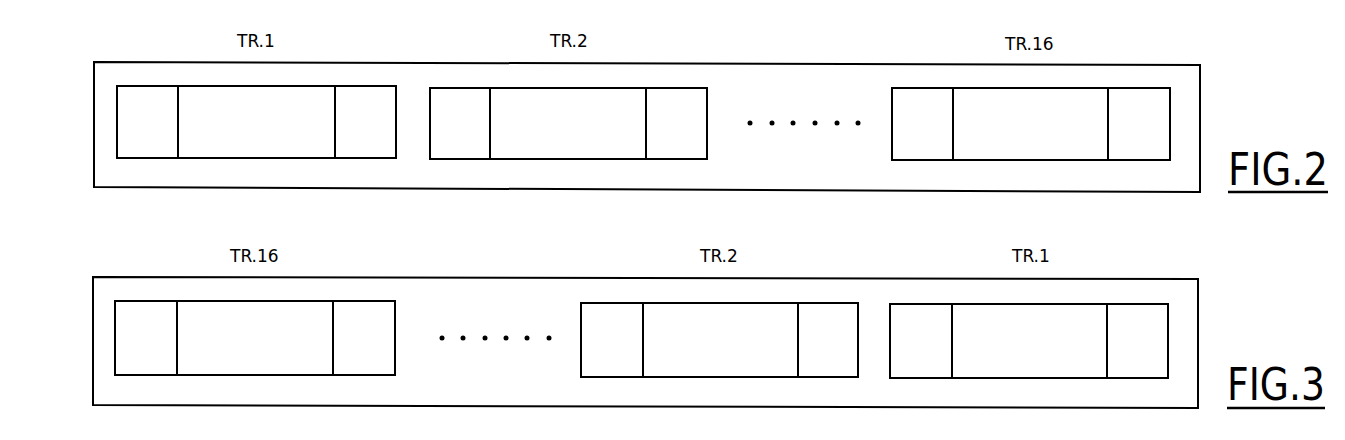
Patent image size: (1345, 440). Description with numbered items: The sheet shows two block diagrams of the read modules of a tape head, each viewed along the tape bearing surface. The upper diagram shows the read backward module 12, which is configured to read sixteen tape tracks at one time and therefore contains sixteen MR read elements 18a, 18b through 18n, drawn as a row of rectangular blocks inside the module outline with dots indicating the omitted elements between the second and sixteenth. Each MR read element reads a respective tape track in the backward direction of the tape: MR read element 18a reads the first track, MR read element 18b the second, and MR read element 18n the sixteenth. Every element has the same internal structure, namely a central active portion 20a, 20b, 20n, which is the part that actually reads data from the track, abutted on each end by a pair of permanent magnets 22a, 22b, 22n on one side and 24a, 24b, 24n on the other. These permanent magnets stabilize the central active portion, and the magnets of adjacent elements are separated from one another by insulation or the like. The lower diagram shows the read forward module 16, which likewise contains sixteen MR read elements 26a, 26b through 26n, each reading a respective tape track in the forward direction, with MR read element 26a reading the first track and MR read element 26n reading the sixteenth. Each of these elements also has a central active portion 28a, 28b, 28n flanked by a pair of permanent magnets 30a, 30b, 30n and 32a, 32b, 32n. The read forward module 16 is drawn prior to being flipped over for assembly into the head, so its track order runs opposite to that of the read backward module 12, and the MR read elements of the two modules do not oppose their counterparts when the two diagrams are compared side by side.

In FIG. 2, the read backward module 12 is at (1200, 102).
In FIG. 3, the read forward module 16 is at (1198, 303).
In FIG. 2, the MR read element 18a is at (262, 94).
In FIG. 2, the MR read element 18b is at (582, 95).
In FIG. 2, the MR read element 18n is at (1041, 96).
In FIG. 2, the central active portion 20a is at (277, 137).
In FIG. 2, the central active portion 20b is at (590, 140).
In FIG. 2, the central active portion 20n is at (1043, 140).
In FIG. 2, the permanent magnet 22a is at (140, 83).
In FIG. 2, the permanent magnet 22b is at (468, 87).
In FIG. 2, the permanent magnet 22n is at (913, 88).
In FIG. 2, the permanent magnet 24a is at (372, 83).
In FIG. 2, the permanent magnet 24b is at (692, 87).
In FIG. 2, the permanent magnet 24n is at (1148, 88).
In FIG. 3, the MR read element 26a is at (1040, 313).
In FIG. 3, the MR read element 26b is at (731, 311).
In FIG. 3, the MR read element 26n is at (277, 310).
In FIG. 3, the central active portion 28a is at (1042, 356).
In FIG. 3, the central active portion 28b is at (737, 354).
In FIG. 3, the central active portion 28n is at (267, 355).
In FIG. 3, the permanent magnet 30a is at (1144, 305).
In FIG. 3, the permanent magnet 30b is at (832, 303).
In FIG. 3, the permanent magnet 30n is at (375, 300).
In FIG. 3, the permanent magnet 32a is at (928, 303).
In FIG. 3, the permanent magnet 32b is at (603, 303).
In FIG. 3, the permanent magnet 32n is at (150, 300).